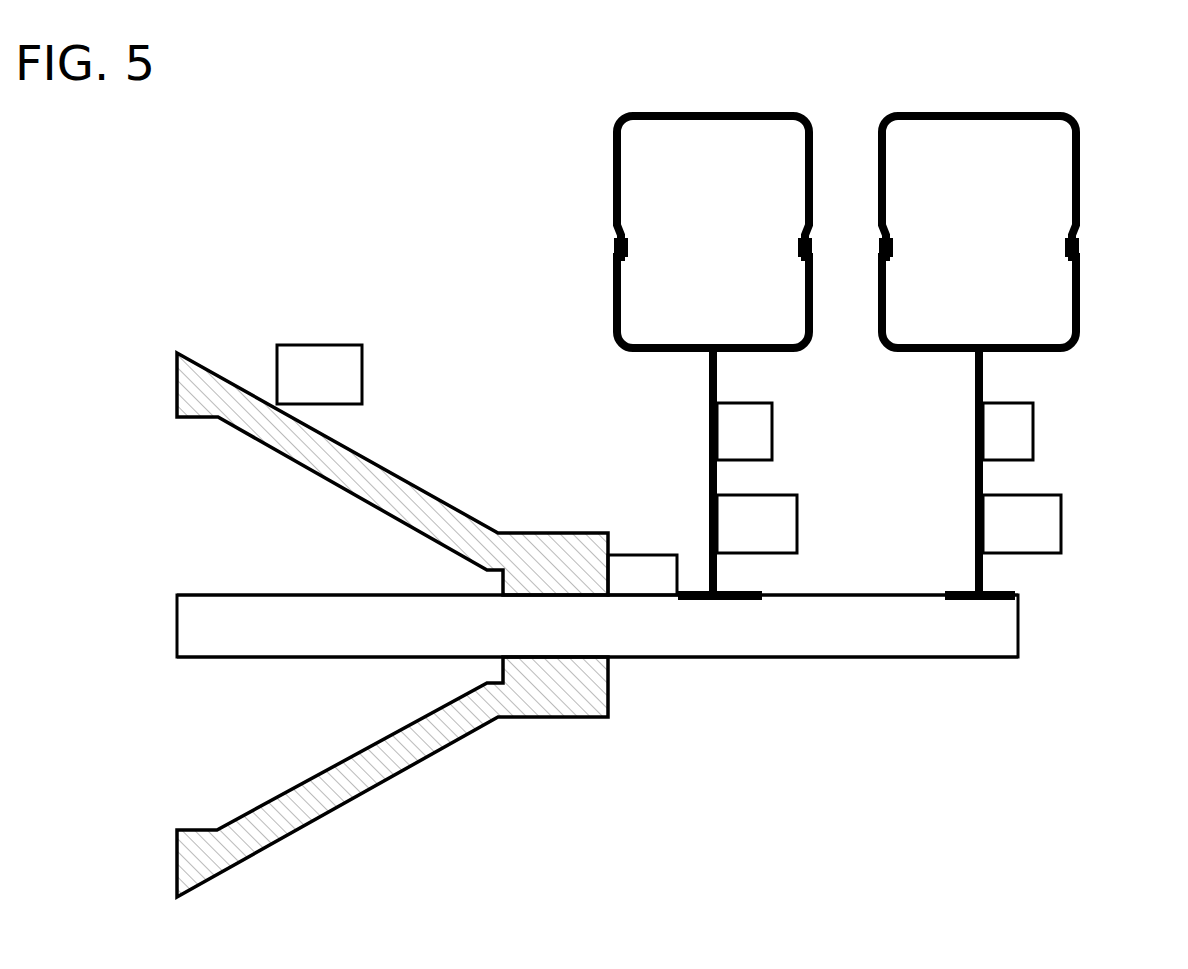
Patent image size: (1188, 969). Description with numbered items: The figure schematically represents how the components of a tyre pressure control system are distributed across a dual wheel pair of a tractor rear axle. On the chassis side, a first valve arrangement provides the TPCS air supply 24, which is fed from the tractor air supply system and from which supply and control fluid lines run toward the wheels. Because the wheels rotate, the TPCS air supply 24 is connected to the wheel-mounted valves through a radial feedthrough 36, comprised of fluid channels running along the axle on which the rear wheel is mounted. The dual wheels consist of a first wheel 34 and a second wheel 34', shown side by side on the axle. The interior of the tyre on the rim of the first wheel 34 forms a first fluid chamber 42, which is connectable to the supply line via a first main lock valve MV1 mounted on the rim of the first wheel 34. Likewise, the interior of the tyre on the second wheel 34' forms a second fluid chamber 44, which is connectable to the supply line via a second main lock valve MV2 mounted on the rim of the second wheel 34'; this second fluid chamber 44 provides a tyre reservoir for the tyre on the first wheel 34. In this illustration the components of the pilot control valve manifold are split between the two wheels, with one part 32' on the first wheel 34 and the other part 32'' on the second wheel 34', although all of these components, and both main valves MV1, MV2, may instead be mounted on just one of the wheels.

The TPCS air supply 24 is at (338, 390).
The first wheel 34 is at (692, 309).
The second wheel 34' is at (1018, 309).
The first fluid chamber 42 is at (658, 153).
The second fluid chamber 44 is at (1018, 328).
The radial feedthrough 36 is at (642, 575).
The first main (lock) valve MV1 is at (743, 430).
The second main (lock) valve MV2 is at (1005, 432).
The pilot control valve manifold (first wheel part) 32' is at (800, 507).
The pilot control valve manifold (second wheel part) 32'' is at (1067, 507).